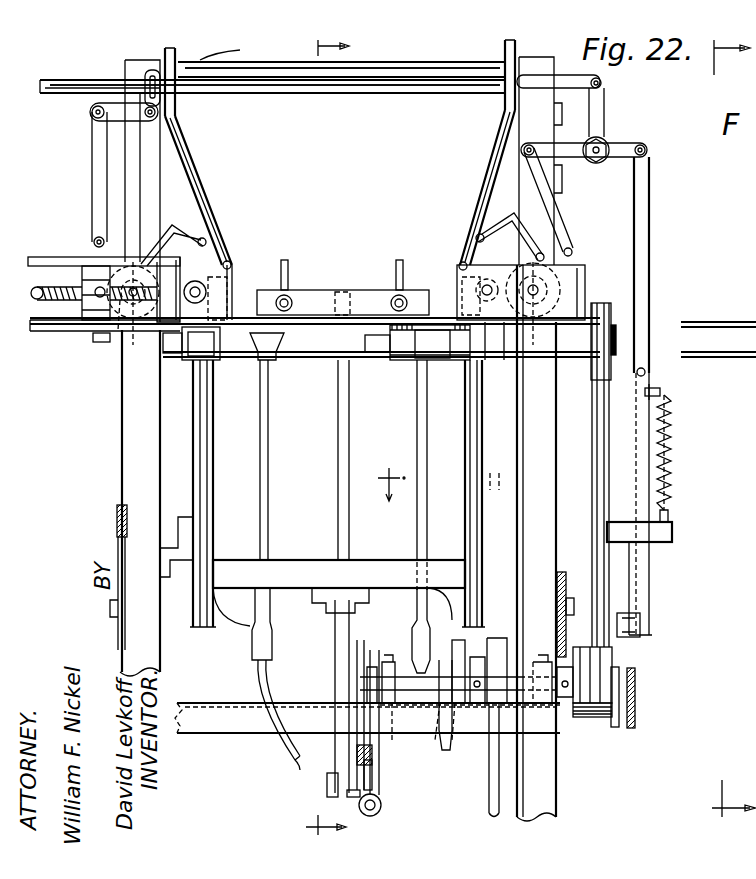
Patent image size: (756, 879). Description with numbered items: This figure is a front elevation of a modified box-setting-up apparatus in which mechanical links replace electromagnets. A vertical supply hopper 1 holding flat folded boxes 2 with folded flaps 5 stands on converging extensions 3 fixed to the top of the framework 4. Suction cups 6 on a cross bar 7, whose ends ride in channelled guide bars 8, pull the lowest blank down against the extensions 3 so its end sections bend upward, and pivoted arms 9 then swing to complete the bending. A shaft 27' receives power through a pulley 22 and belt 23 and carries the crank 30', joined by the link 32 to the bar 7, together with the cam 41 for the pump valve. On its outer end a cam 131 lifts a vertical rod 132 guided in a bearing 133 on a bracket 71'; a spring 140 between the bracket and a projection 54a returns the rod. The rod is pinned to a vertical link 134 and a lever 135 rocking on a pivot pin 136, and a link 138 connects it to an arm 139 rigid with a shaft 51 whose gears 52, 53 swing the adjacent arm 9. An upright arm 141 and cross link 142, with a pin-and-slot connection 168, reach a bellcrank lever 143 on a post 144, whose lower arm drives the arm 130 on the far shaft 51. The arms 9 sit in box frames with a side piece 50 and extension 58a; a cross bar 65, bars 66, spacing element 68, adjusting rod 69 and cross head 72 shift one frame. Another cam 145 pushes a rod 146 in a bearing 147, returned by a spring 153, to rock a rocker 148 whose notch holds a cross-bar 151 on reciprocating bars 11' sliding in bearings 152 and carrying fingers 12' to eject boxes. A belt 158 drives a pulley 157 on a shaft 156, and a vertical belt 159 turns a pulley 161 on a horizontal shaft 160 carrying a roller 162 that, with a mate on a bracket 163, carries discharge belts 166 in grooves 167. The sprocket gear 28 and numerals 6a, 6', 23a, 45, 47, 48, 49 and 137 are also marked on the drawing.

The supply hopper 1 is at (518, 43).
The folded boxes 2 is at (359, 63).
The converging extensions 3 is at (216, 212).
The framework 4 is at (135, 492).
The folded flaps 5 is at (208, 62).
The suction cups 6 is at (323, 372).
The rod 6a is at (262, 485).
The curved rod 6' is at (331, 725).
The cross bar 7 is at (372, 565).
The channelled guide bars 8 is at (195, 437).
The pivoted arms 9 is at (203, 238).
The reciprocating bars 11' is at (341, 288).
The fingers 12' is at (341, 276).
The pulley 22 is at (503, 638).
The belt 23 is at (490, 795).
The section line 23a is at (447, 529).
The shaft 27' is at (655, 698).
The sprocket gear 28 is at (340, 437).
The crank 30' is at (327, 708).
The link 32 is at (334, 753).
The cam 41 is at (458, 652).
The pivot 45 is at (225, 262).
The gear housing 47 is at (128, 330).
The block 48 is at (187, 366).
The arm 49 is at (163, 213).
The side piece 50 is at (233, 276).
The shaft 51 is at (122, 342).
The gear 52 is at (122, 313).
The gear 53 is at (205, 275).
The projection 54a is at (668, 432).
The extension 58a is at (88, 258).
The cross bar 65 is at (90, 258).
The bars 66 is at (42, 332).
The spacing element 68 is at (175, 355).
The adjusting rod 69 is at (46, 284).
The bracket 71' is at (669, 530).
The cross head 72 is at (85, 315).
The arm 130 is at (133, 265).
The cam 131 is at (633, 652).
The vertical rod 132 is at (660, 388).
The bearing 133 is at (662, 450).
The vertical link 134 is at (649, 216).
The lever 135 is at (627, 142).
The pivot pin 136 is at (160, 115).
The bracket 137 is at (577, 166).
The link 138 is at (95, 143).
The arm 139 is at (629, 614).
The spring 140 is at (678, 490).
The upright arm 141 is at (601, 93).
The cross link 142 is at (412, 85).
The bellcrank lever 143 is at (113, 100).
The post 144 is at (140, 166).
The cam 145 is at (372, 752).
The rod 146 is at (379, 784).
The bearing 147 is at (375, 763).
The rocker 148 is at (340, 446).
The cross-bar 151 is at (329, 303).
The bearings 152 is at (272, 288).
The spring 153 is at (381, 810).
The shaft 156 is at (615, 684).
The pulley 157 is at (572, 718).
The belt 158 is at (573, 648).
The vertical belt 159 is at (592, 481).
The horizontal shaft 160 is at (620, 338).
The pulley 161 is at (611, 311).
The roller 162 is at (455, 363).
The bracket 163 is at (117, 521).
The discharge belts 166 is at (704, 350).
The grooves 167 is at (75, 94).
The pin-and-slot connection 168 is at (163, 88).